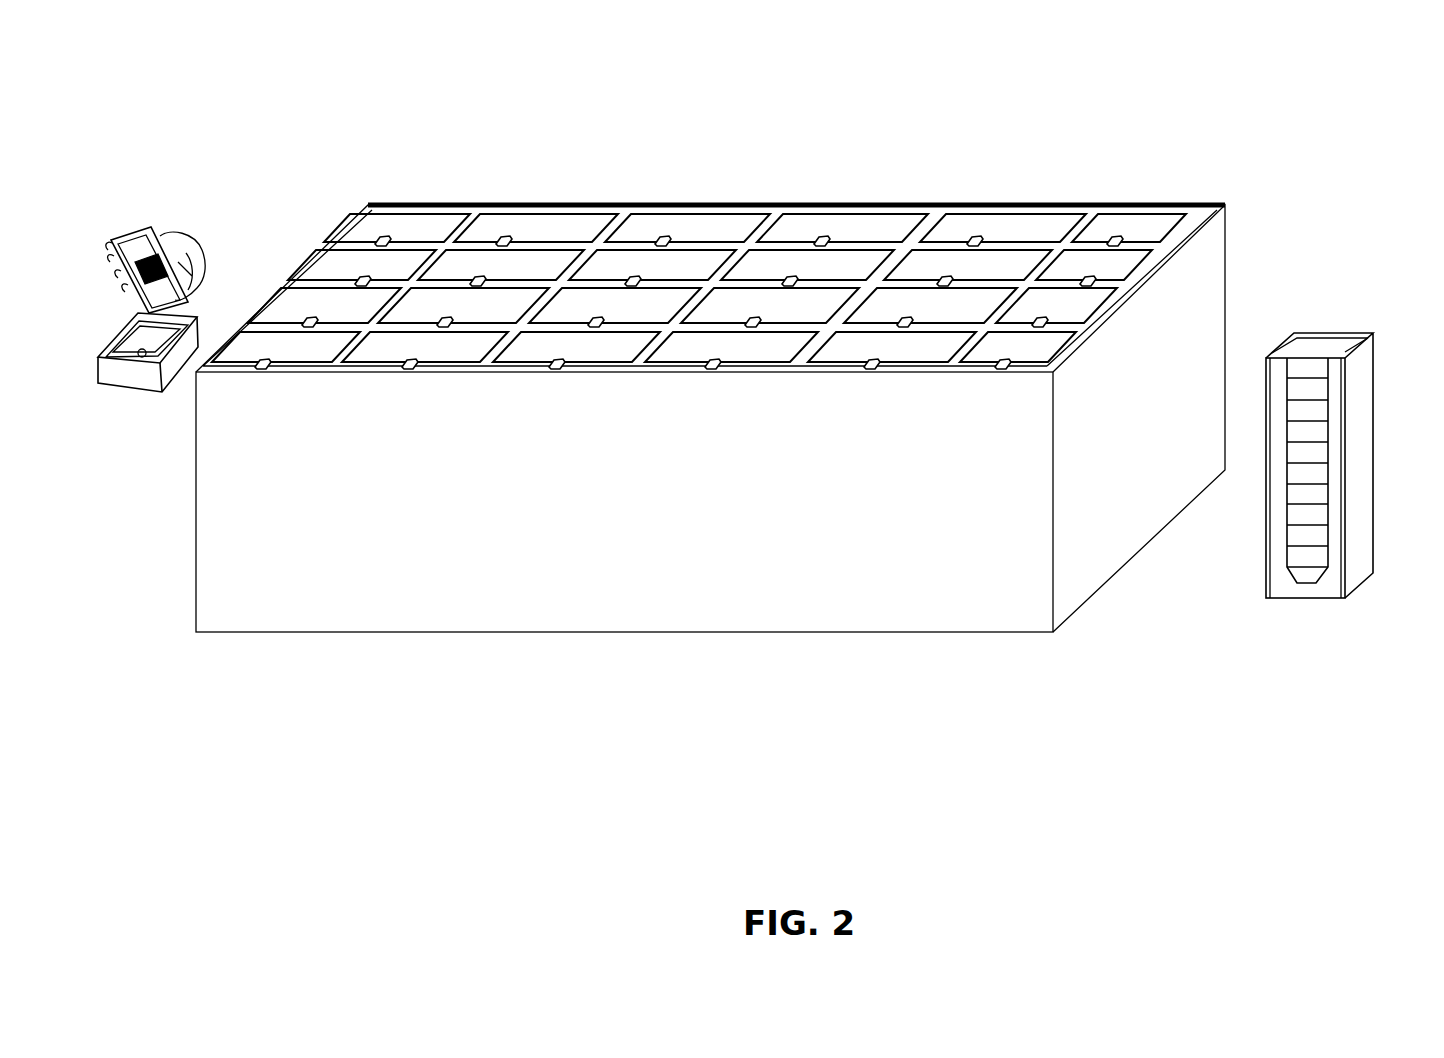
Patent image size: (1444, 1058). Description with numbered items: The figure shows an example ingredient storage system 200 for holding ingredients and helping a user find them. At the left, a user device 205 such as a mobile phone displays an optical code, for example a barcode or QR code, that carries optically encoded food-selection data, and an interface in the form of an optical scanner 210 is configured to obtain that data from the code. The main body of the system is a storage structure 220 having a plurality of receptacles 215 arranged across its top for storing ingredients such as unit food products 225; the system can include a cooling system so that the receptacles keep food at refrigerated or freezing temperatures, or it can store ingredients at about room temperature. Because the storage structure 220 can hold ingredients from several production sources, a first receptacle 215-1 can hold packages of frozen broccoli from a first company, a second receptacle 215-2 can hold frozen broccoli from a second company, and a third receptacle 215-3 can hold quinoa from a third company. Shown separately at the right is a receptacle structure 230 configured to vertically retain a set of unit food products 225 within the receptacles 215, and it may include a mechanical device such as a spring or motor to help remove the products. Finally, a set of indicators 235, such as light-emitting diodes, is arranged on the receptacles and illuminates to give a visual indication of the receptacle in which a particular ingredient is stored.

The ingredient storage system 200 is at (308, 35).
The user device 205 is at (128, 228).
The optical scanner 210 is at (128, 392).
The receptacles 215 is at (575, 191).
The first receptacle 215-1 is at (366, 222).
The second receptacle 215-2 is at (478, 222).
The third receptacle 215-3 is at (892, 224).
The storage structure 220 is at (908, 632).
The unit food product 225 is at (1300, 372).
The receptacle structure 230 is at (1368, 578).
The indicators 235 is at (1108, 238).